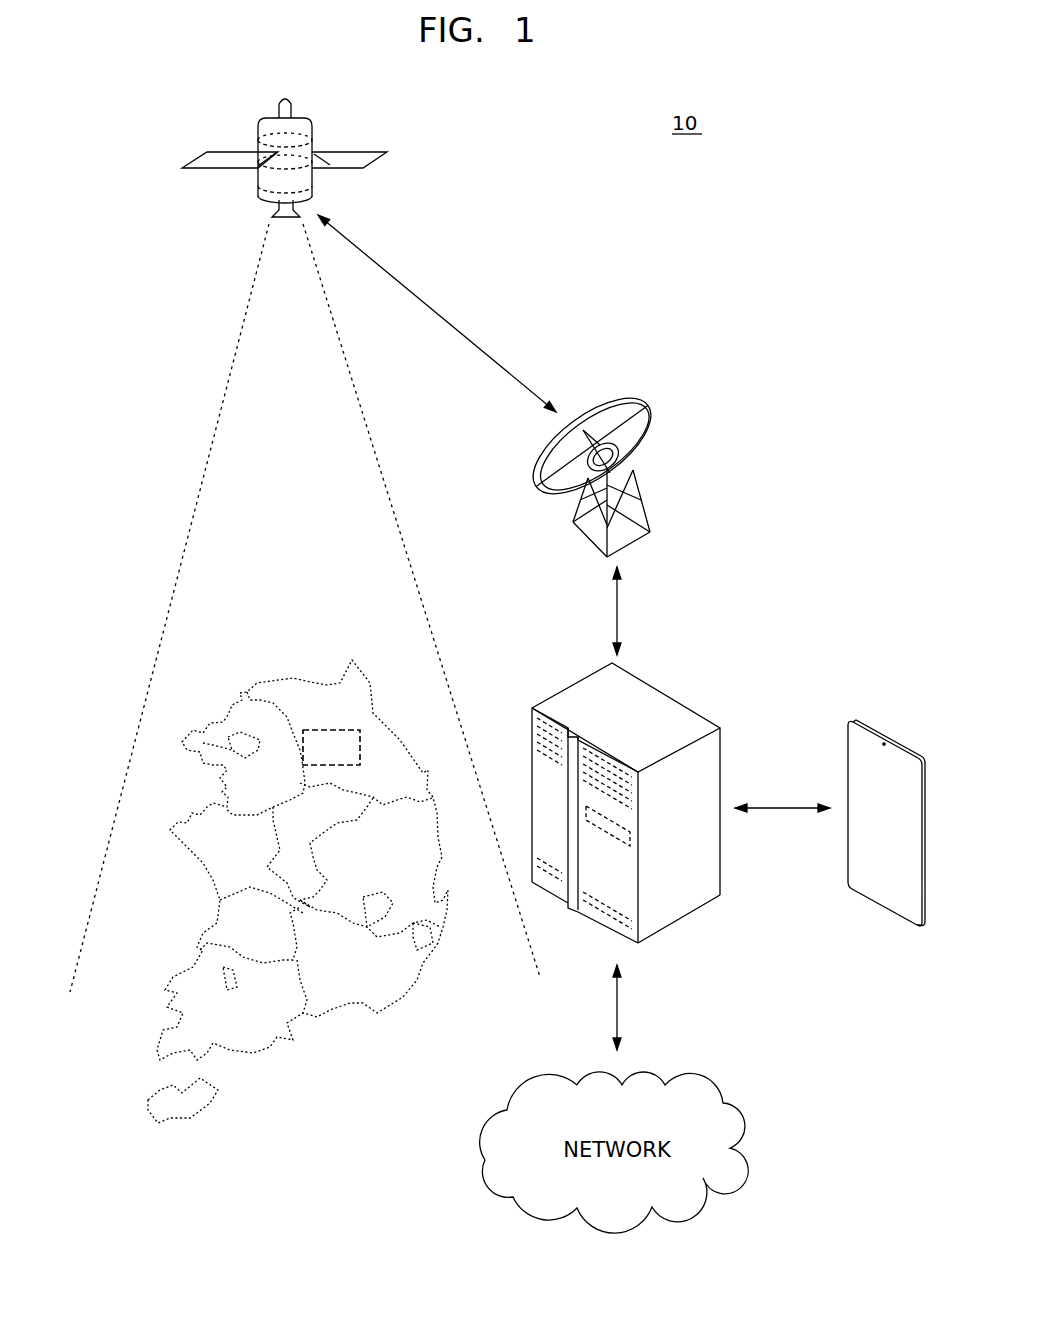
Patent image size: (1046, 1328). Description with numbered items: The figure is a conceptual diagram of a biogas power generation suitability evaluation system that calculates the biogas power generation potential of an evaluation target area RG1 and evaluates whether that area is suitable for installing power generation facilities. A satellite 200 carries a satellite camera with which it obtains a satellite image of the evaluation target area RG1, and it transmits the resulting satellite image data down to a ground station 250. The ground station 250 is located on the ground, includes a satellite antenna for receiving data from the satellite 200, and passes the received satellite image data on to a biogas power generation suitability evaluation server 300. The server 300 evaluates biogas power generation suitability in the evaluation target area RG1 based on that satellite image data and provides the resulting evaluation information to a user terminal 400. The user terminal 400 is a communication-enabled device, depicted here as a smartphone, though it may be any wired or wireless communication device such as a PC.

The satellite 200 is at (304, 136).
The ground station 250 is at (627, 412).
The biogas power generation suitability evaluation server 300 is at (670, 713).
The user terminal 400 is at (878, 730).
The evaluation target area RG1 is at (363, 746).